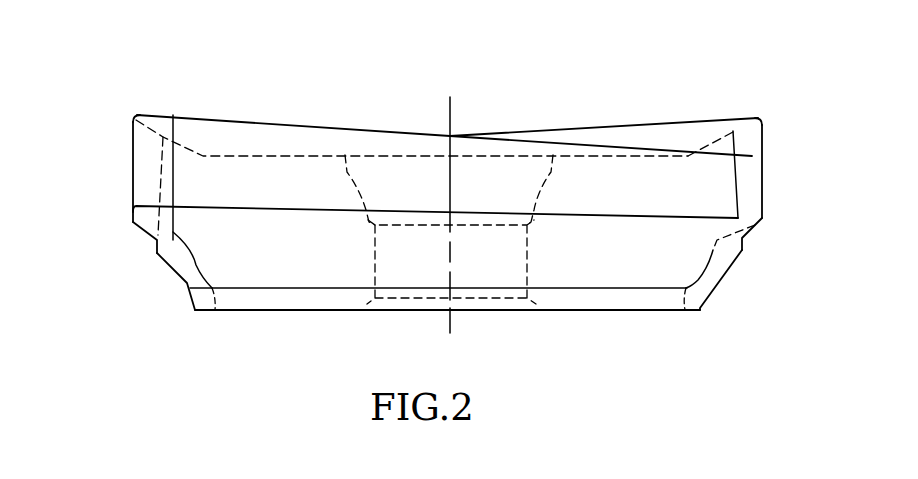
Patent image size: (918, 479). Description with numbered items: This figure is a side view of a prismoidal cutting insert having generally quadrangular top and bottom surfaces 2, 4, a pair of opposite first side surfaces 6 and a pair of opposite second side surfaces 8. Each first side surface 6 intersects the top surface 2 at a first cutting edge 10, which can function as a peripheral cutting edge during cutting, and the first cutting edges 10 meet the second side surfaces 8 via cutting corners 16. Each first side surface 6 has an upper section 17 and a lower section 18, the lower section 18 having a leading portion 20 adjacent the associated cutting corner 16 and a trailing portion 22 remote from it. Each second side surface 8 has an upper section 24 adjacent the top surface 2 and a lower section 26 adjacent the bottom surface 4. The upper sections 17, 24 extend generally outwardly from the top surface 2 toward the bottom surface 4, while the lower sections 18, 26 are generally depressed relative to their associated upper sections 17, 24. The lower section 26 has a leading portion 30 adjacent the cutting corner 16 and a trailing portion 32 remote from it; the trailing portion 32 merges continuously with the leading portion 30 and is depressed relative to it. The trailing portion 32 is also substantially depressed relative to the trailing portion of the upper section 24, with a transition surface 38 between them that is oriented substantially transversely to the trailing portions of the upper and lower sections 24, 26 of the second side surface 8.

The top surface 2 is at (472, 102).
The bottom surface 4 is at (342, 312).
The first side surface 6 is at (576, 176).
The second side surface 8 is at (128, 171).
The first cutting edge 10 is at (256, 120).
The cutting corner 16 is at (131, 121).
The upper section of first side surface 17 is at (514, 178).
The lower section of first side surface 18 is at (498, 258).
The leading portion 20 is at (280, 252).
The trailing portion 22 is at (649, 258).
The upper section of second side surface 24 is at (753, 143).
The lower section of second side surface 26 is at (752, 238).
The leading portion 30 is at (181, 278).
The trailing portion 32 is at (168, 252).
The transition surface 38 is at (722, 266).